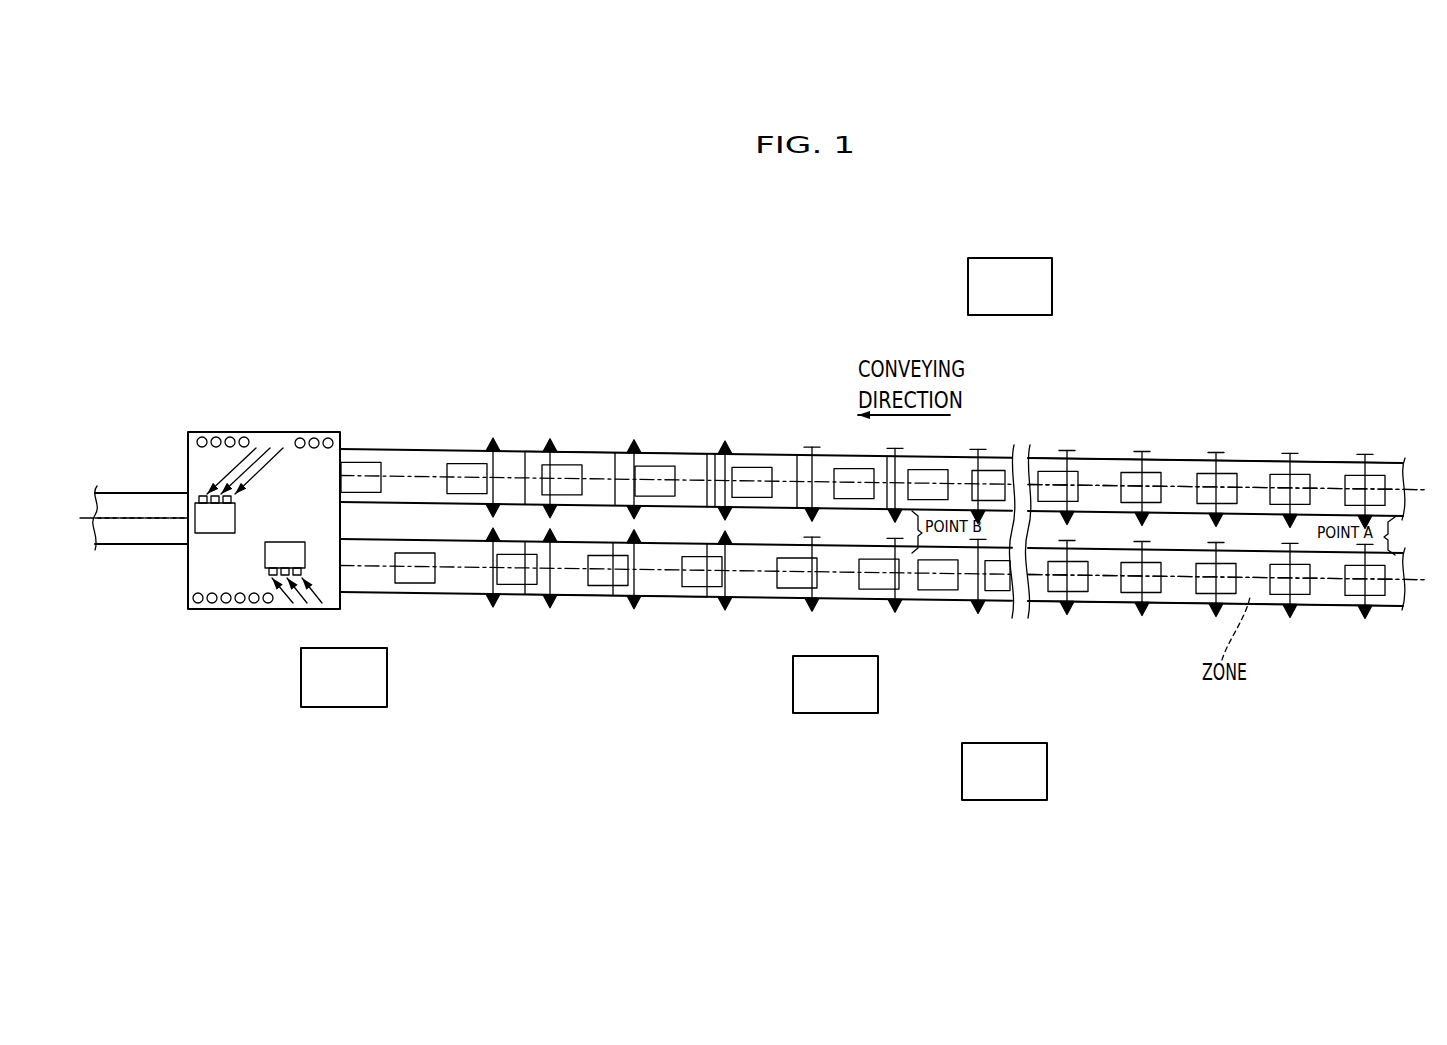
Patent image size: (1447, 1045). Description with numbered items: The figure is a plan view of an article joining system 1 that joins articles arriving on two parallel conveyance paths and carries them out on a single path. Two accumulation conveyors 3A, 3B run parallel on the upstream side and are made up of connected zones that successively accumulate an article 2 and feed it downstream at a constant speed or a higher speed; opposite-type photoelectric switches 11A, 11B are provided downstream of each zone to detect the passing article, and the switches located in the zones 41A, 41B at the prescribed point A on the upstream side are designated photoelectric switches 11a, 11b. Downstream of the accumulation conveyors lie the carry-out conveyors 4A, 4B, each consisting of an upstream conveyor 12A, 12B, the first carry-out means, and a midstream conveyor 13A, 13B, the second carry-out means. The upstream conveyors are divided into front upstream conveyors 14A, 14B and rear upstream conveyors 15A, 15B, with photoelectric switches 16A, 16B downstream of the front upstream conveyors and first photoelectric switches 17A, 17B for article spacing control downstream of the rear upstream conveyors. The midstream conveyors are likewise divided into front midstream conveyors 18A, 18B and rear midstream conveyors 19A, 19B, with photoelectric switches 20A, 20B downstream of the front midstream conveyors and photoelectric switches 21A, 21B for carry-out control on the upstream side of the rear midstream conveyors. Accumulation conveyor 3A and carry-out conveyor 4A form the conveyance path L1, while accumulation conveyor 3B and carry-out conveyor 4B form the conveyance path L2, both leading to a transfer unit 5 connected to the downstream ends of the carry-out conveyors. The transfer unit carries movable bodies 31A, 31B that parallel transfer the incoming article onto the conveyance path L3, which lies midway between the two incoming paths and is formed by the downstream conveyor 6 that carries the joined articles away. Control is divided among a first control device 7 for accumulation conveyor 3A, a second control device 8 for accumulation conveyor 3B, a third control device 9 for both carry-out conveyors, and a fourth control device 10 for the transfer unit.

The article joining system 1 is at (1280, 346).
The article 2 is at (1240, 477).
The accumulation conveyor 3A is at (1098, 466).
The accumulation conveyor 3B is at (1105, 612).
The carry-out conveyor 4A is at (620, 450).
The carry-out conveyor 4B is at (585, 603).
The transfer unit 5 is at (270, 432).
The downstream conveyor 6 is at (132, 537).
The first control device 7 is at (1052, 283).
The second control device 8 is at (1047, 770).
The third control device 9 is at (837, 702).
The fourth control device 10 is at (350, 687).
The photoelectric switch 11a is at (898, 447).
The photoelectric switch 11b is at (895, 612).
The photoelectric switches 11A is at (1051, 437).
The photoelectric switches 11B is at (1051, 604).
The upstream conveyor 12A is at (714, 450).
The upstream conveyor 12B is at (702, 603).
The midstream conveyor 13A is at (527, 450).
The midstream conveyor 13B is at (520, 602).
The front upstream conveyor 14A is at (789, 454).
The front upstream conveyor 14B is at (765, 600).
The rear upstream conveyor 15A is at (694, 453).
The rear upstream conveyor 15B is at (673, 601).
The photoelectric switch 16A is at (727, 440).
The photoelectric switch 16B is at (725, 610).
The first photoelectric switch 17A is at (636, 439).
The first photoelectric switch 17B is at (634, 610).
The front midstream conveyor 18A is at (605, 452).
The front midstream conveyor 18B is at (593, 601).
The rear midstream conveyor 19A is at (398, 462).
The rear midstream conveyor 19B is at (440, 594).
The photoelectric switch 20A is at (552, 437).
The photoelectric switch 20B is at (550, 610).
The photoelectric switch 21A is at (493, 437).
The photoelectric switch 21B is at (493, 610).
The movable body 31A is at (222, 432).
The movable body 31B is at (213, 603).
The zone 41A is at (1390, 472).
The zone 41B is at (1397, 612).
The conveyance path L1 is at (1415, 490).
The conveyance path L2 is at (1422, 582).
The conveyance path L3 is at (121, 490).